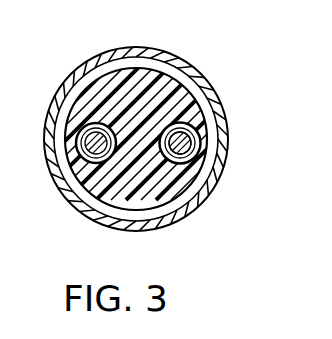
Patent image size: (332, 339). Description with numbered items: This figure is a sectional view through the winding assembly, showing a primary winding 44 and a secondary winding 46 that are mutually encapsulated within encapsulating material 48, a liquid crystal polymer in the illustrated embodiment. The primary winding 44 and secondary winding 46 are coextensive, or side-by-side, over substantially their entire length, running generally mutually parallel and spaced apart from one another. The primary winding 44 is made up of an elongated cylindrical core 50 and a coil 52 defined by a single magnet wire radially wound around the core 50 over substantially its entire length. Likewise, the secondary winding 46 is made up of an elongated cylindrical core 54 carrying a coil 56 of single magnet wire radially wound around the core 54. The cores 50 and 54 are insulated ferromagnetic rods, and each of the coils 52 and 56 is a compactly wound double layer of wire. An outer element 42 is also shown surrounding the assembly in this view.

The outer jacket 42 is at (222, 98).
The primary winding 44 is at (205, 171).
The secondary winding 46 is at (89, 106).
The encapsulating material 48 is at (185, 92).
The core 50 is at (184, 166).
The coil 52 is at (200, 135).
The core 54 is at (73, 195).
The coil 56 is at (108, 127).